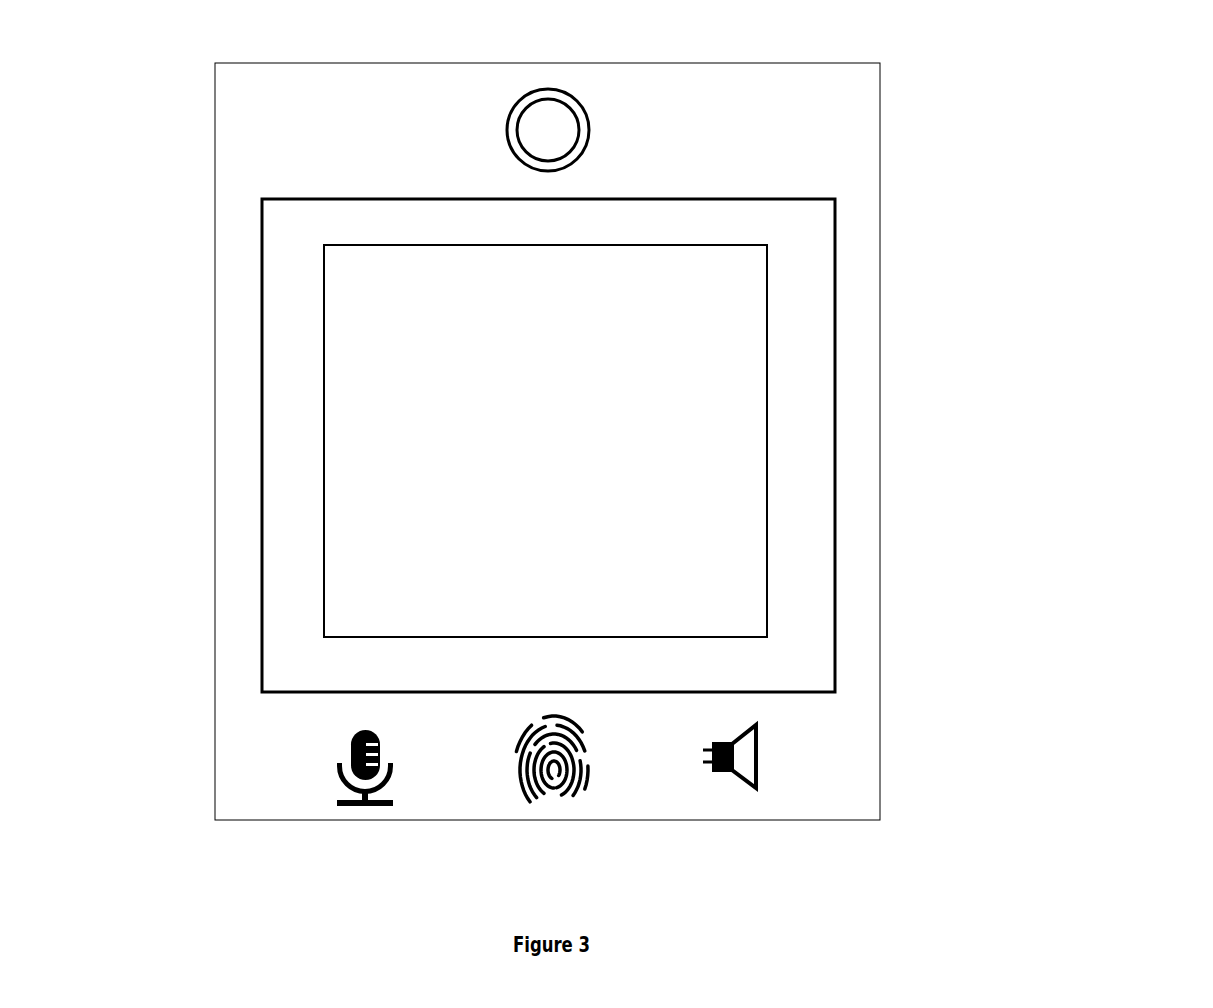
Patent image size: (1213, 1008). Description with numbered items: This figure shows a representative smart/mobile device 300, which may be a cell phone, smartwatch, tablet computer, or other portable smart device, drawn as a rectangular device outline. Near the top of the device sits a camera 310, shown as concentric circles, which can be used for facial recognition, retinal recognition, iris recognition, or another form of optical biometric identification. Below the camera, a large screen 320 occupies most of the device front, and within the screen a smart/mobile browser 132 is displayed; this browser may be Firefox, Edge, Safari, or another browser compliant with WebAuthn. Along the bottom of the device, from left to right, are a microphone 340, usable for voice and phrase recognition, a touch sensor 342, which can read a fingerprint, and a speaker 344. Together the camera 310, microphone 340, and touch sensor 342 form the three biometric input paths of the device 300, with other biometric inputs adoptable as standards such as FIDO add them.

The computing device 300 is at (1185, 56).
The camera 310 is at (605, 107).
The screen 320 is at (688, 220).
The smart/mobile browser 132 is at (598, 452).
The microphone 340 is at (367, 810).
The touch sensor 342 is at (626, 894).
The speaker 344 is at (737, 795).